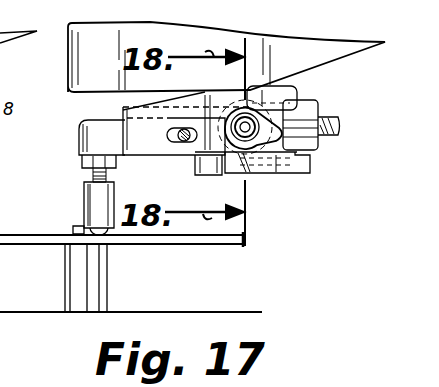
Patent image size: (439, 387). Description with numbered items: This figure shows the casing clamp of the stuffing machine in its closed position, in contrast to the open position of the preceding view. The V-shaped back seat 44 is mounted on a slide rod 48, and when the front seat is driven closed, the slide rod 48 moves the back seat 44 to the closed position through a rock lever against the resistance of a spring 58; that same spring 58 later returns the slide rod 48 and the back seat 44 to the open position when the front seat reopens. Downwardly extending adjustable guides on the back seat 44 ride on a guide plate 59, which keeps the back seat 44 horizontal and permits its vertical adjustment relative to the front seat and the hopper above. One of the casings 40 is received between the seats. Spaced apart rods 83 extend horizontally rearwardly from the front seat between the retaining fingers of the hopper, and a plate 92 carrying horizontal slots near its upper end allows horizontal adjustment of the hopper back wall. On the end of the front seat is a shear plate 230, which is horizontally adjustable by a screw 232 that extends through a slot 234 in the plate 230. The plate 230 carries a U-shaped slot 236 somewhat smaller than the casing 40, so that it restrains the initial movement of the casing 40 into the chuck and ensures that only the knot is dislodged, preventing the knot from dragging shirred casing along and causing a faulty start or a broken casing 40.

The plate 92 is at (82, 62).
The spring 58 is at (80, 138).
The slot 234 is at (160, 118).
The screw 232 is at (181, 143).
The back seat 44 is at (280, 122).
The slide rod 48 is at (337, 132).
The slot 236 is at (300, 150).
The rods 83 is at (315, 170).
The shear plate 230 is at (283, 166).
The casing 40 is at (236, 155).
The guide plate 59 is at (197, 240).